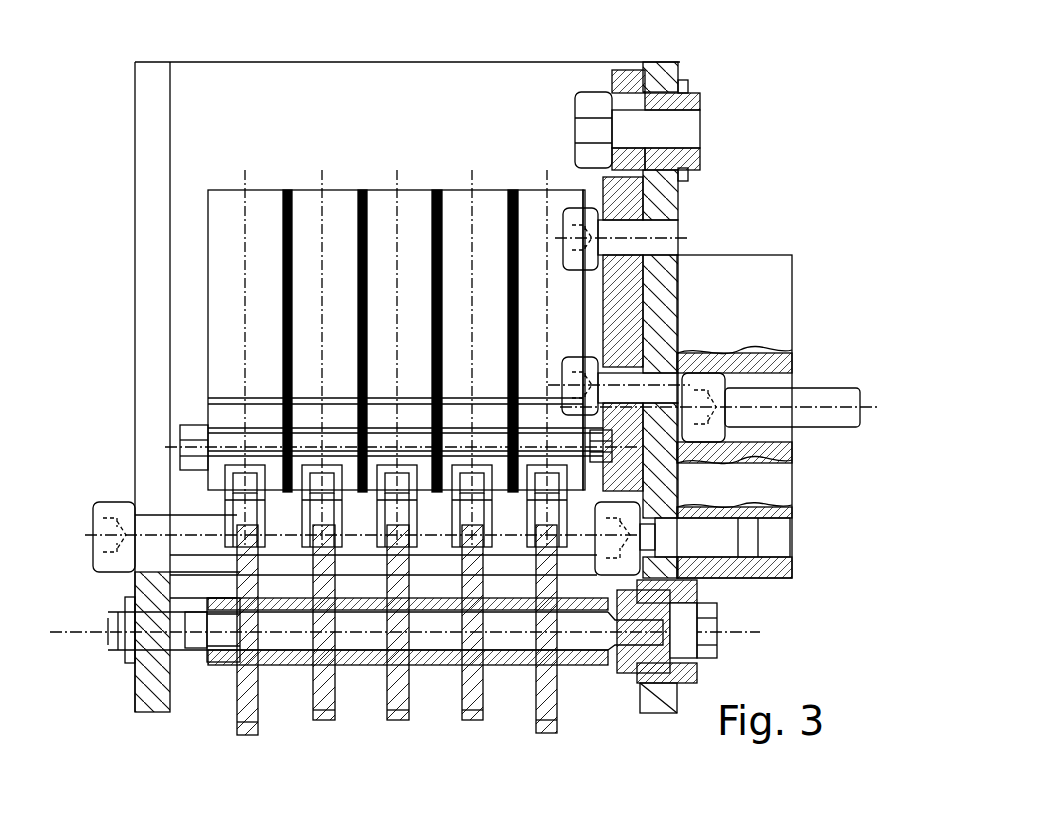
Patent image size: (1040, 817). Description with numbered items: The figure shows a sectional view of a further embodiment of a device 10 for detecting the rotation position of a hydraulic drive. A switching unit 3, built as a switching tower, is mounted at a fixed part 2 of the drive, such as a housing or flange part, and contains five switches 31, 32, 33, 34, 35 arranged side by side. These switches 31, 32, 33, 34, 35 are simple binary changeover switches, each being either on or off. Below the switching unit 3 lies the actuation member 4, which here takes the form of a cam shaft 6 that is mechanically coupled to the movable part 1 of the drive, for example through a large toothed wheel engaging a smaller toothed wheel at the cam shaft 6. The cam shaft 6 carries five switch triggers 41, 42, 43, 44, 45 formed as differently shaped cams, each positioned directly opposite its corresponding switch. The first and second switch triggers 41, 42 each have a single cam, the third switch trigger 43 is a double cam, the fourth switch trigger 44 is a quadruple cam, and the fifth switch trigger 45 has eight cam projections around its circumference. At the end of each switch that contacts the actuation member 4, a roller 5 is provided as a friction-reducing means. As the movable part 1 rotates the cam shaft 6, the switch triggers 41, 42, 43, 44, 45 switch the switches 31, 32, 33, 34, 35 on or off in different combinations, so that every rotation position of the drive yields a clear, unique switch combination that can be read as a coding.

The movable part 1 is at (608, 708).
The fixed part 2 is at (185, 250).
The switching unit 3 is at (228, 180).
The actuation member 4 is at (212, 722).
The roller 5 is at (228, 515).
The cam shaft 6 is at (283, 648).
The device 10 is at (330, 86).
The first switch 31 is at (262, 200).
The second switch 32 is at (338, 200).
The third switch 33 is at (407, 200).
The fourth switch 34 is at (458, 200).
The fifth switch 35 is at (523, 200).
The first switch trigger 41 is at (246, 728).
The second switch trigger 42 is at (325, 722).
The third switch trigger 43 is at (398, 722).
The fourth switch trigger 44 is at (472, 722).
The fifth switch trigger 45 is at (547, 732).